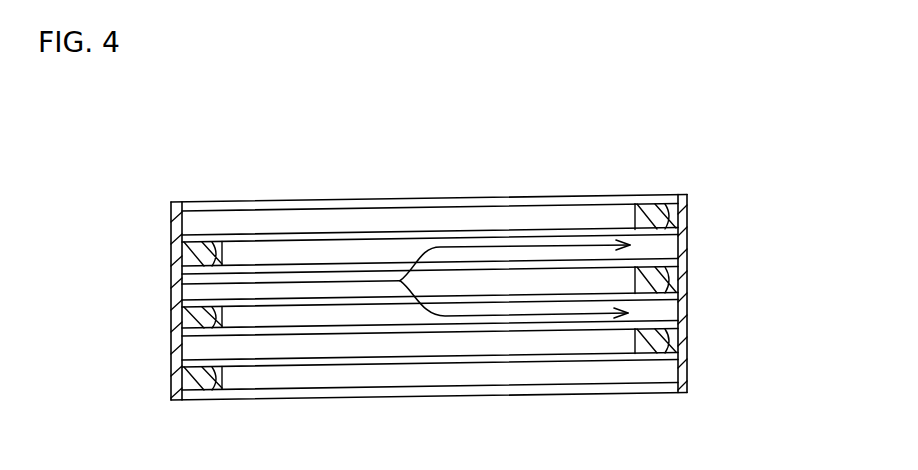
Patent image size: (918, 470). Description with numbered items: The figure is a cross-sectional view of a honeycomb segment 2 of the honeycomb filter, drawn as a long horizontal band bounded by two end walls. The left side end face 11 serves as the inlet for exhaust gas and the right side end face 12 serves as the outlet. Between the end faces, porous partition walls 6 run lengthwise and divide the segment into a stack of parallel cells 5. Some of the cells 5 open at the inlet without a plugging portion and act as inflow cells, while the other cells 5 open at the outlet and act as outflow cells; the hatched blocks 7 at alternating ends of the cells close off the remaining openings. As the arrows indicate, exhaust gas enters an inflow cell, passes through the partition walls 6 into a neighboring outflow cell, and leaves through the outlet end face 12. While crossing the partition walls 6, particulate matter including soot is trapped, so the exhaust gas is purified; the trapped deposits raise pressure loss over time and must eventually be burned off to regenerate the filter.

The honeycomb segment 2 is at (505, 184).
The cells 5 is at (193, 223).
The partition walls 6 is at (313, 268).
The seal member 7 is at (215, 323).
The left side end face 11 is at (172, 198).
The right side end face 12 is at (688, 196).